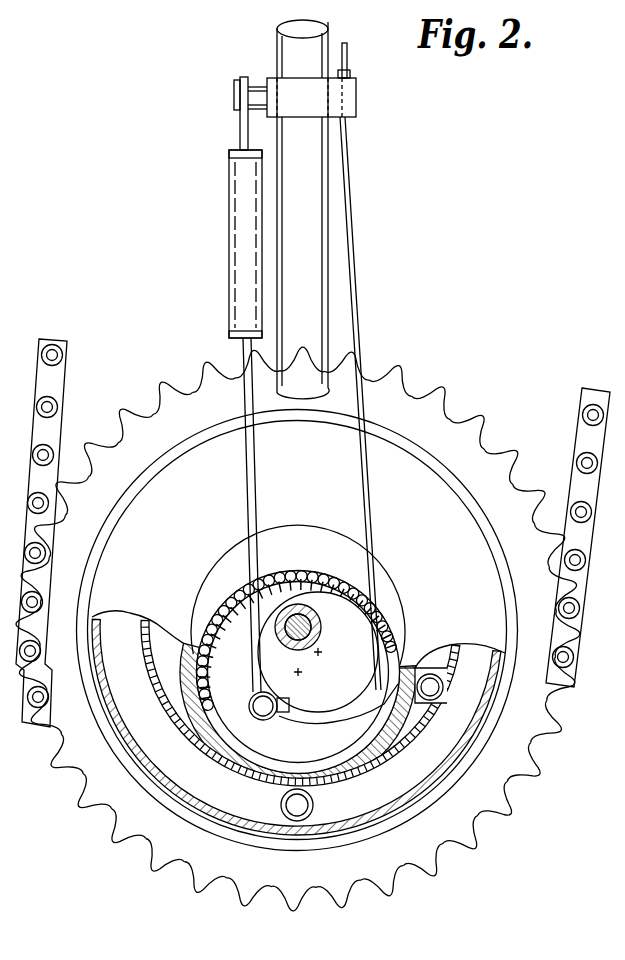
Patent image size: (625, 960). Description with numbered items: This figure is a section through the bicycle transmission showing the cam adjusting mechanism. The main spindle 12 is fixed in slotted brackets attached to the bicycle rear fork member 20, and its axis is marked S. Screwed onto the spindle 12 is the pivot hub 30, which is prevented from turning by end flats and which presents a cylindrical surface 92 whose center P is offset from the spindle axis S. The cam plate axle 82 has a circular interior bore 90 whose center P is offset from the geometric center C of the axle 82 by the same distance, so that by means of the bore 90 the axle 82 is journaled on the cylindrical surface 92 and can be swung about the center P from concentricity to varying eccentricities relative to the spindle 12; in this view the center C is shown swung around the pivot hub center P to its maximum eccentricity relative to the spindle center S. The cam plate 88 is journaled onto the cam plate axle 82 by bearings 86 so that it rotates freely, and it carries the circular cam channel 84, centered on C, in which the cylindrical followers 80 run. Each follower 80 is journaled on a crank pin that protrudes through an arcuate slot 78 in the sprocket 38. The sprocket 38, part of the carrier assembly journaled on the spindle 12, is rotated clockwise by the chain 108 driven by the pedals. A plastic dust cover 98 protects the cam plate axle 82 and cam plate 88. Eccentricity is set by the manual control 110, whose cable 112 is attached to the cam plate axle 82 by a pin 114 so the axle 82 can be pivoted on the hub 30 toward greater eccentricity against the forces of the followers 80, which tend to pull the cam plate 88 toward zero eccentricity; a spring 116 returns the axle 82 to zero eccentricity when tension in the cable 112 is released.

The bicycle rear fork member 20 is at (277, 48).
The manual control 110 is at (354, 232).
The spring 116 is at (229, 188).
The cable 112 is at (360, 277).
The sprocket 38 is at (445, 382).
The chain 108 is at (70, 368).
The plastic dust cover 98 is at (452, 564).
The circular cam channel 84 is at (436, 716).
The bearings 86 is at (347, 760).
The cam plate axle 82 is at (318, 722).
The arcuate slot 78 is at (432, 705).
The cylindrical surface 92 is at (305, 582).
The pivot hub 30 is at (363, 664).
The circular interior bore 90 is at (380, 722).
The main spindle 12 is at (318, 621).
The spindle axis S is at (308, 630).
The center of cylindrical surface P is at (318, 656).
The geometric center of cam plate axle C is at (300, 676).
The pin 114 is at (275, 716).
The cam plate 88 is at (456, 652).
The cylindrical follower 80 is at (446, 694).